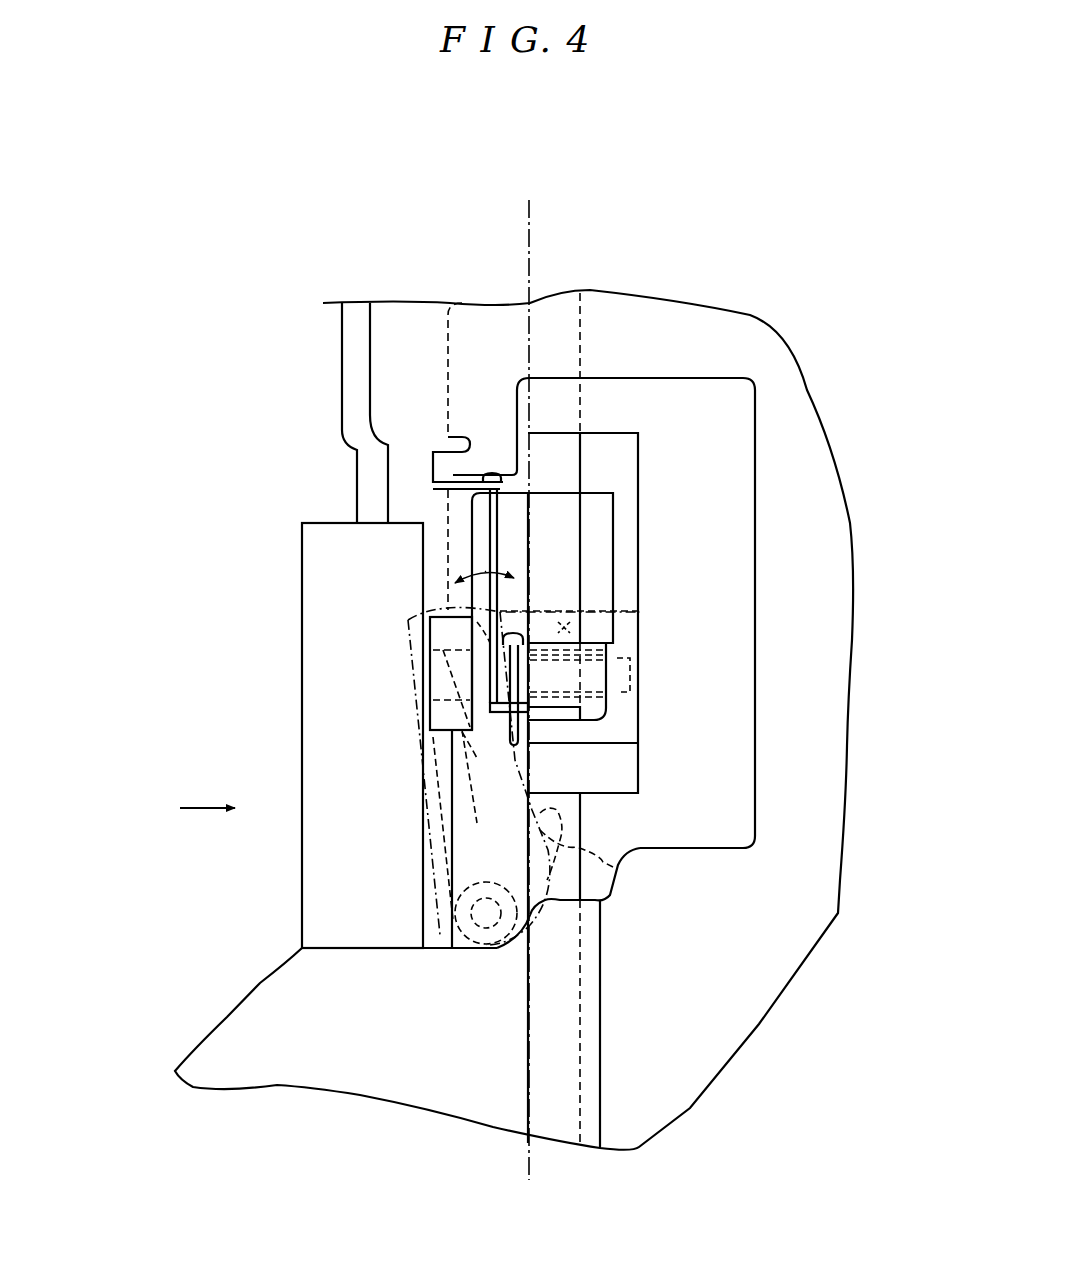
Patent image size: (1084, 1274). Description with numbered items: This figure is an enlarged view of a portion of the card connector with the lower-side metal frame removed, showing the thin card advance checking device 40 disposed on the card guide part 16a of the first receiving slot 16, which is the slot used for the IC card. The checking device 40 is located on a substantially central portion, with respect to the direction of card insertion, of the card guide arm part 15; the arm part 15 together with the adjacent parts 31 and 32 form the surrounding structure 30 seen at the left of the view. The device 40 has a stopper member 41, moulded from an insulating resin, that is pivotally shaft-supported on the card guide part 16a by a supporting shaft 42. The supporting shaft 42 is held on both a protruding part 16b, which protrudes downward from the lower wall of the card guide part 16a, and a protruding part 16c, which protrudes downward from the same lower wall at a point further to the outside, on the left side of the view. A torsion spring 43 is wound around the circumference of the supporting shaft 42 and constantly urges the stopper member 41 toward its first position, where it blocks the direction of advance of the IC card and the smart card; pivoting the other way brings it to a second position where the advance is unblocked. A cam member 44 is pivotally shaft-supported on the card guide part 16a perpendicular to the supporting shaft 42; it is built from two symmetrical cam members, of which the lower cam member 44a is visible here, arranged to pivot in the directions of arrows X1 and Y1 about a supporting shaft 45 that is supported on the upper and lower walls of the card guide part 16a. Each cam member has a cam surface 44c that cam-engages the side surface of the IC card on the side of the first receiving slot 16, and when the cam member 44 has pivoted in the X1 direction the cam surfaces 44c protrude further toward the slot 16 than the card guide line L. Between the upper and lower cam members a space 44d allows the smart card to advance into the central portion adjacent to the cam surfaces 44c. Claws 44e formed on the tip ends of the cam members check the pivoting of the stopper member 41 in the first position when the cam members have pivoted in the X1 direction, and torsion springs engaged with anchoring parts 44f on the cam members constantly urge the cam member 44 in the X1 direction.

The card guide arm part 15 is at (455, 508).
The first receiving slot 16 is at (565, 1100).
The card guide part 16a is at (578, 828).
The protruding part 16b is at (620, 722).
The protruding part 16c is at (442, 633).
The connector unit 30 is at (312, 432).
The arm 31 is at (350, 336).
The block 32 is at (303, 912).
The thin card advance checking device 40 is at (555, 762).
The stopper member 41 is at (613, 652).
The supporting shaft 42 is at (632, 675).
The torsion spring 43 is at (517, 632).
The cam member 44 is at (577, 917).
The cam member 44a is at (458, 852).
The cam surface 44c is at (612, 874).
The space 44d is at (575, 800).
The claw 44e is at (620, 612).
The anchoring part 44f is at (455, 745).
The supporting shaft 45 is at (486, 948).
The card guide line L is at (532, 215).
The pivot direction X1 is at (514, 558).
The pivot direction Y1 is at (472, 563).